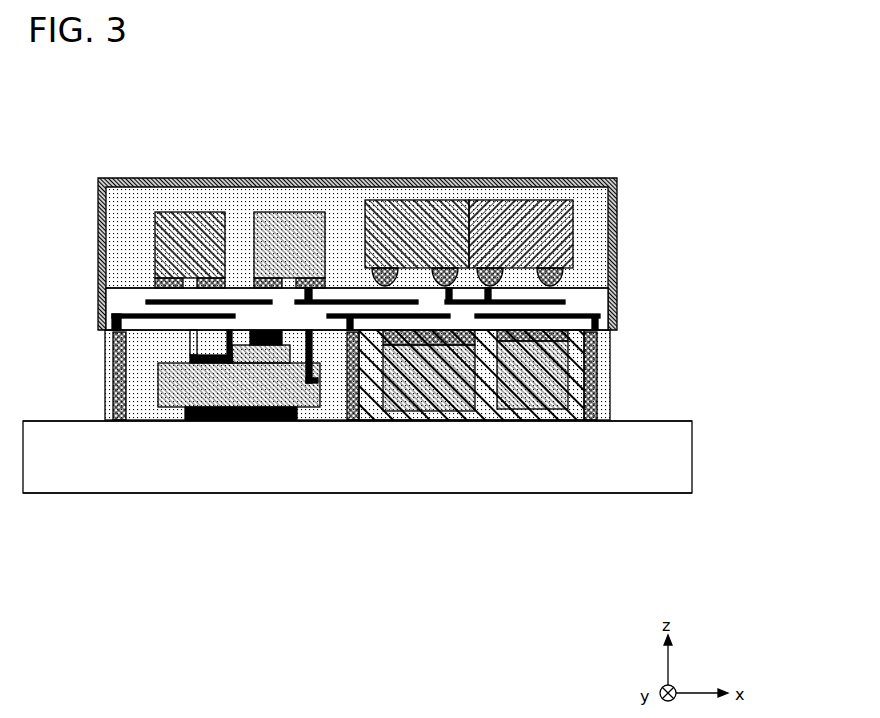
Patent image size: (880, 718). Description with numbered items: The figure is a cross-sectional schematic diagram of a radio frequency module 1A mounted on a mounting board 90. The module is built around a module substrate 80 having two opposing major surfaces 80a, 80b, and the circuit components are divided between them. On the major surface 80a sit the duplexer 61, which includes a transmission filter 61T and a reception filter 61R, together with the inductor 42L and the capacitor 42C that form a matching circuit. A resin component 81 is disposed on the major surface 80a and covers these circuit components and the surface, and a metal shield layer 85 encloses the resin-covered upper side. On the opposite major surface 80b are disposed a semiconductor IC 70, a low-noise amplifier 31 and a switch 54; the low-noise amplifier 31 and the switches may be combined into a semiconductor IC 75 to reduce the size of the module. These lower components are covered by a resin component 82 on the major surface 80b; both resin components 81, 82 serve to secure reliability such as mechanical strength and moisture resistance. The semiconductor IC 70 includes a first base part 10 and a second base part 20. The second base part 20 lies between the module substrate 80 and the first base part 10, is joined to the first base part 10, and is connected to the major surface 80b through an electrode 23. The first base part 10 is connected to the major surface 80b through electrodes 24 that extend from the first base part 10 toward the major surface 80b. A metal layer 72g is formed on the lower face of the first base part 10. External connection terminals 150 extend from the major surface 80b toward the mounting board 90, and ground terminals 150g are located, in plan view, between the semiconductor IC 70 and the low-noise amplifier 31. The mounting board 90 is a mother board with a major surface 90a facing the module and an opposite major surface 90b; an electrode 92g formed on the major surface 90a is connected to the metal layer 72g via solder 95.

The radio frequency module 1A is at (652, 68).
The metal shield layer 85 is at (128, 178).
The resin component 81 is at (600, 208).
The resin component 82 is at (606, 387).
The module substrate 80 is at (600, 307).
The major surface 80a is at (597, 287).
The major surface 80b is at (605, 334).
The capacitor 42C is at (170, 217).
The inductor 42L is at (300, 217).
The duplexer 61 is at (469, 196).
The transmission filter 61T is at (412, 210).
The reception filter 61R is at (521, 209).
The external connection terminals 150 is at (118, 420).
The ground terminals 150g is at (354, 418).
The semiconductor IC 75 is at (490, 400).
The low-noise amplifier 31 is at (437, 388).
The switch 54 is at (525, 390).
The first base part 10 is at (290, 390).
The second base part 20 is at (283, 352).
The semiconductor IC 70 is at (375, 546).
The electrode 23 is at (253, 334).
The electrodes 24 is at (228, 356).
The metal layer 72g is at (230, 410).
The electrode 92g is at (248, 420).
The solder 95 is at (260, 416).
The mounting board 90 is at (678, 463).
The major surface 90a is at (673, 421).
The major surface 90b is at (667, 493).